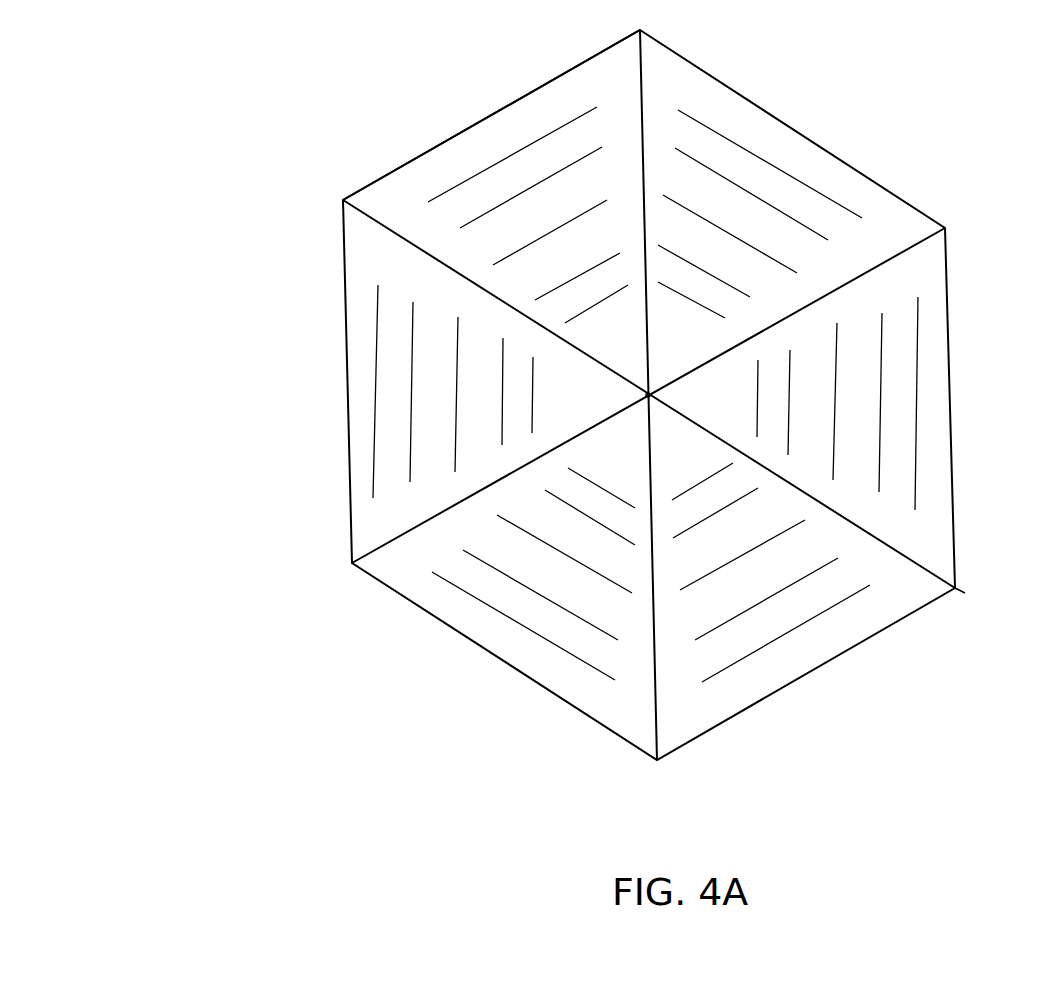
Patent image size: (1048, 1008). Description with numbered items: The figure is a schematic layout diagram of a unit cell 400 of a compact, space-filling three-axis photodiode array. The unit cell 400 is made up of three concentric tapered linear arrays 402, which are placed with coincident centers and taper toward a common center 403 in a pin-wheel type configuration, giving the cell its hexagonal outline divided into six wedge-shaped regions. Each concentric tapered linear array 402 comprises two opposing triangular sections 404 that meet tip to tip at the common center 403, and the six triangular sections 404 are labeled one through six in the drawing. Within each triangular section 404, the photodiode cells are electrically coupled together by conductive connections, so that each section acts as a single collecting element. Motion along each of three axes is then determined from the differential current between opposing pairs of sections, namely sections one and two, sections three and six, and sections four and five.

The unit cell 400 is at (1022, 906).
The concentric tapered linear array 402 is at (450, 183).
The common center 403 is at (647, 396).
The triangular section 404 is at (645, 394).